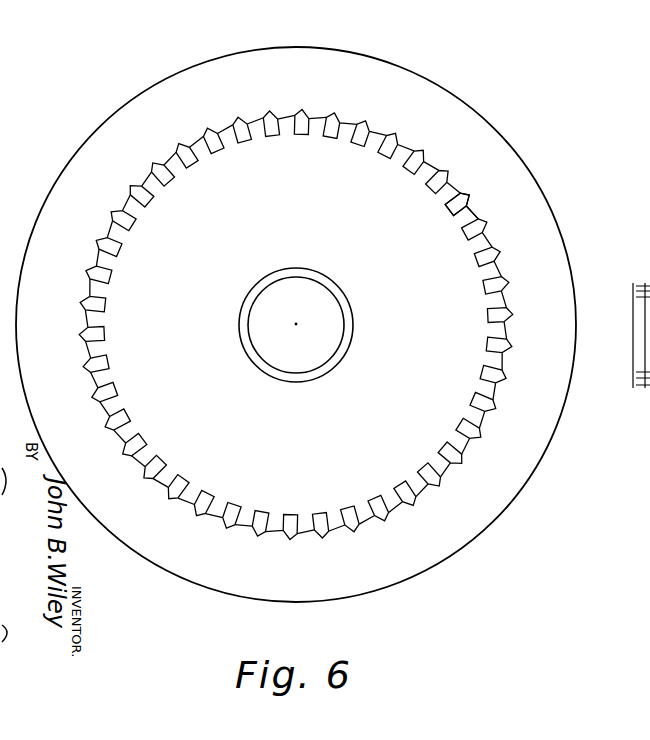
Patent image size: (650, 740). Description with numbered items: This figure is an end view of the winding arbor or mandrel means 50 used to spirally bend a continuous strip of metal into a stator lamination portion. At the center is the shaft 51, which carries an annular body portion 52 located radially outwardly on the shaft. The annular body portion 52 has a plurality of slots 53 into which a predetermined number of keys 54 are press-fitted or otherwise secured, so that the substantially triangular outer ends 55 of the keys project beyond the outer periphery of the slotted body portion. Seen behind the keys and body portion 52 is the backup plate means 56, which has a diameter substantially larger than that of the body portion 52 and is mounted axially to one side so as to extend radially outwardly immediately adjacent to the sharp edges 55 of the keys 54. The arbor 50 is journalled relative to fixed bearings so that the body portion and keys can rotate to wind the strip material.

The winding arbor or mandrel means 50 is at (457, 92).
The shaft 51 is at (320, 341).
The annular body portion 52 is at (177, 210).
The slots 53 is at (485, 232).
The keys 54 is at (337, 115).
The substantially triangular outer ends 55 is at (245, 140).
The backup plate means 56 is at (547, 260).